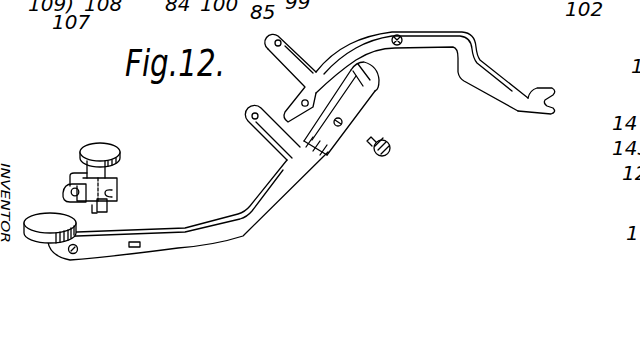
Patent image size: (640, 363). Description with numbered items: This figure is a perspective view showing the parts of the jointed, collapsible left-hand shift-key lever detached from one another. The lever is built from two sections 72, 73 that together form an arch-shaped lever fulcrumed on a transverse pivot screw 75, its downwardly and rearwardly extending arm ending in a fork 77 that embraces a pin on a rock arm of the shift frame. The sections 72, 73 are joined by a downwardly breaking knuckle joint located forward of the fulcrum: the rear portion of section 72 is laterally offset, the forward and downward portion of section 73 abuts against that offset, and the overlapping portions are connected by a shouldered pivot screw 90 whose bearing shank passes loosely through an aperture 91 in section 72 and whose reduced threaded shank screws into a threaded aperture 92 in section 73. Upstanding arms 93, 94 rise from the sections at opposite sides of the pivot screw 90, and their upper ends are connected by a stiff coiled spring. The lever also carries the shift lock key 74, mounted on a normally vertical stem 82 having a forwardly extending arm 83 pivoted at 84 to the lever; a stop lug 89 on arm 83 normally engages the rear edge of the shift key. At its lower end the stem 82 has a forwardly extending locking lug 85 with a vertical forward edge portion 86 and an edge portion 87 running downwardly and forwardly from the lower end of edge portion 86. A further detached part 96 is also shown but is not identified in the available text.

The shift-key lever section 72 is at (204, 221).
The shift-key lever section 73 is at (442, 30).
The shift lock key 74 is at (118, 148).
The transverse pivot screw 75 is at (435, 60).
The fork 77 is at (554, 103).
The stem 82 is at (110, 170).
The forwardly extending arm 83 is at (84, 165).
The pivot 84 is at (76, 254).
The locking lug 85 is at (108, 208).
The vertical forward edge portion 86 is at (80, 199).
The edge portion 87 is at (42, 214).
The stop lug 89 is at (72, 175).
The shouldered pivot screw 90 is at (383, 157).
The aperture 91 is at (368, 138).
The threaded aperture 92 is at (302, 103).
The upstanding arm 93 is at (268, 137).
The upstanding arm 94 is at (294, 57).
The clamp sleeve 96 is at (368, 82).